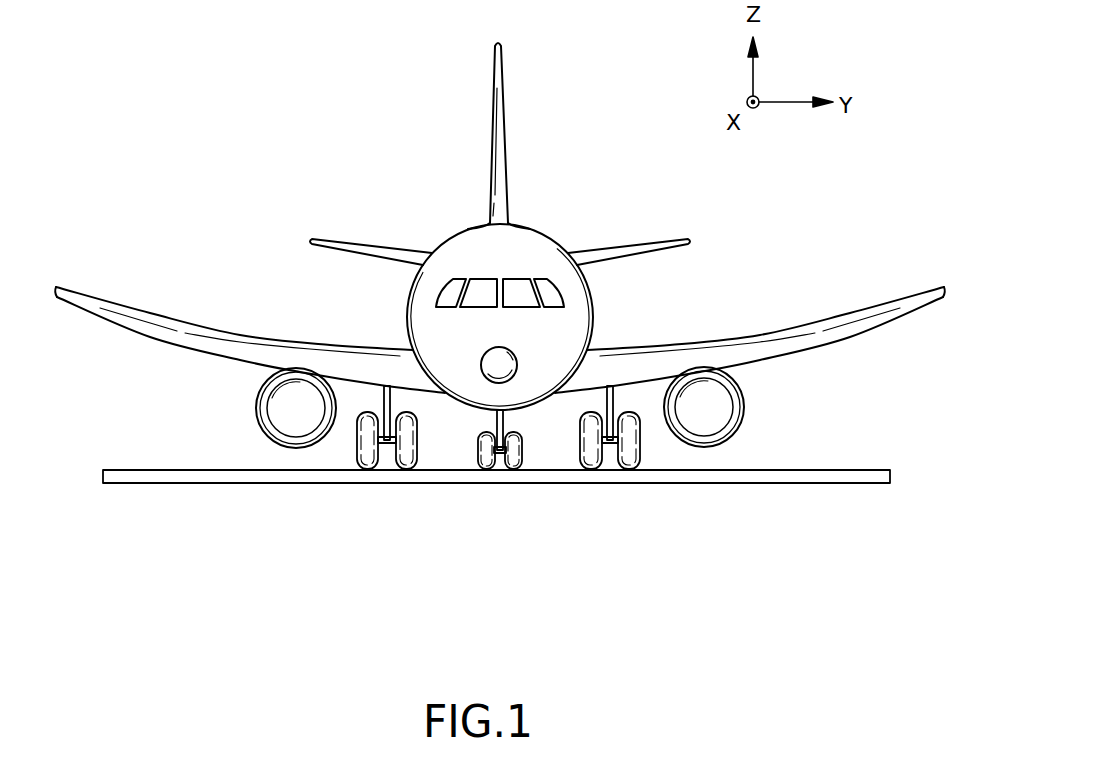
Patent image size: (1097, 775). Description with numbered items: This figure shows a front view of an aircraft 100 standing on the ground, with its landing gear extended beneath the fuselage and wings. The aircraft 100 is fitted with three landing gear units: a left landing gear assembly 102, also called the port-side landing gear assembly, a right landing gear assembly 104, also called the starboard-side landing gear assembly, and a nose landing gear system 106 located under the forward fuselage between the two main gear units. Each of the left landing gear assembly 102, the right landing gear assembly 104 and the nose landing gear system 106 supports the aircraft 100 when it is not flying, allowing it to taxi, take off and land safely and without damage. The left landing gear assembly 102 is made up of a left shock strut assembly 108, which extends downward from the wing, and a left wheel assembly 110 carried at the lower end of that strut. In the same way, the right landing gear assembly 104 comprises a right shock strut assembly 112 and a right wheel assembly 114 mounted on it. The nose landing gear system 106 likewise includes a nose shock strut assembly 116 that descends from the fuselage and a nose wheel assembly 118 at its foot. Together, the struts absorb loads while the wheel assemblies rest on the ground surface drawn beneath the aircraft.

The aircraft 100 is at (338, 132).
The left landing gear assembly 102 is at (680, 466).
The right landing gear assembly 104 is at (358, 382).
The nose landing gear system 106 is at (455, 469).
The left shock strut assembly 108 is at (606, 401).
The left wheel assembly 110 is at (609, 443).
The right shock strut assembly 112 is at (383, 432).
The right wheel assembly 114 is at (387, 458).
The nose shock strut assembly 116 is at (514, 413).
The nose wheel assembly 118 is at (499, 456).